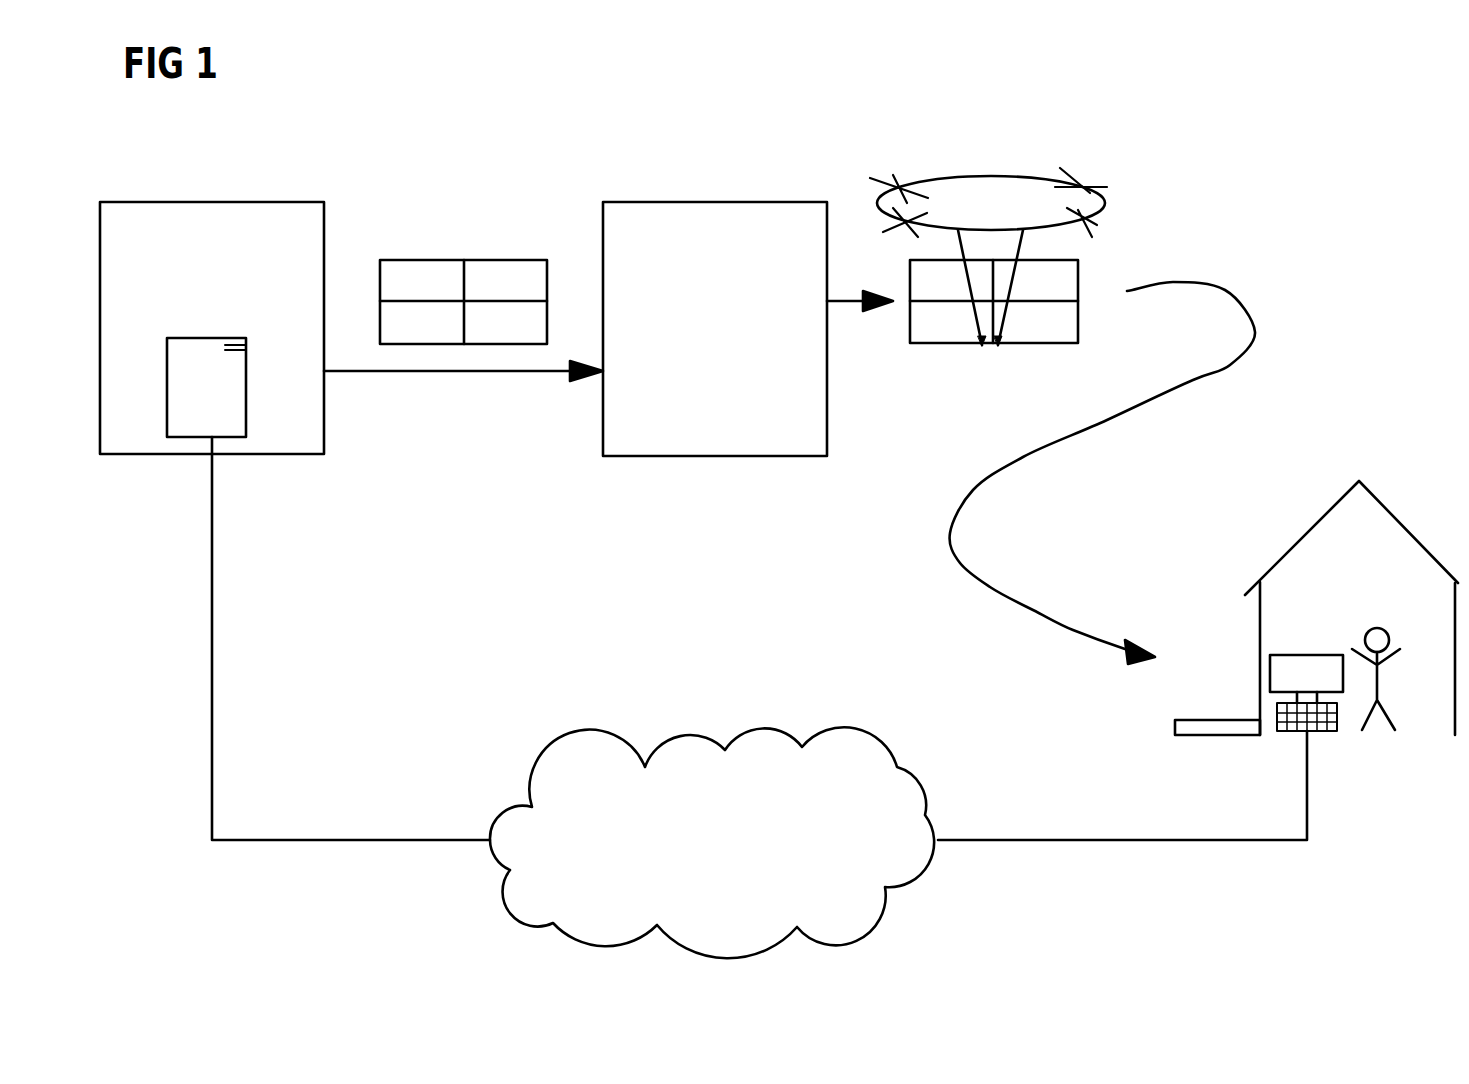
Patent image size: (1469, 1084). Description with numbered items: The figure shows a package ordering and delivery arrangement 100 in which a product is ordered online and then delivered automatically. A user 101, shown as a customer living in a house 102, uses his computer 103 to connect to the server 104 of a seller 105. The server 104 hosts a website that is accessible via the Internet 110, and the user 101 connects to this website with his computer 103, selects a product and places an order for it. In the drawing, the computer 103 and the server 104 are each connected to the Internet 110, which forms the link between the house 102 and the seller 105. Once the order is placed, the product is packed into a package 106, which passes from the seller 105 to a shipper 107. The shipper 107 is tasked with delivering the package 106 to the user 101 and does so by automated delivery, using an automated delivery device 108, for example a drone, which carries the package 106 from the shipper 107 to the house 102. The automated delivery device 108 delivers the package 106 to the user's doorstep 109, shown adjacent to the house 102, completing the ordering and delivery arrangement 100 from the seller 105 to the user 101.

The package ordering and delivery arrangement 100 is at (1287, 100).
The user 101 is at (1383, 727).
The house 102 is at (1390, 510).
The computer 103 is at (1302, 655).
The server 104 is at (183, 338).
The seller 105 is at (313, 202).
The package 106 is at (508, 260).
The shipper 107 is at (743, 202).
The automated delivery device 108 is at (993, 178).
The doorstep 109 is at (1185, 718).
The Internet 110 is at (760, 738).